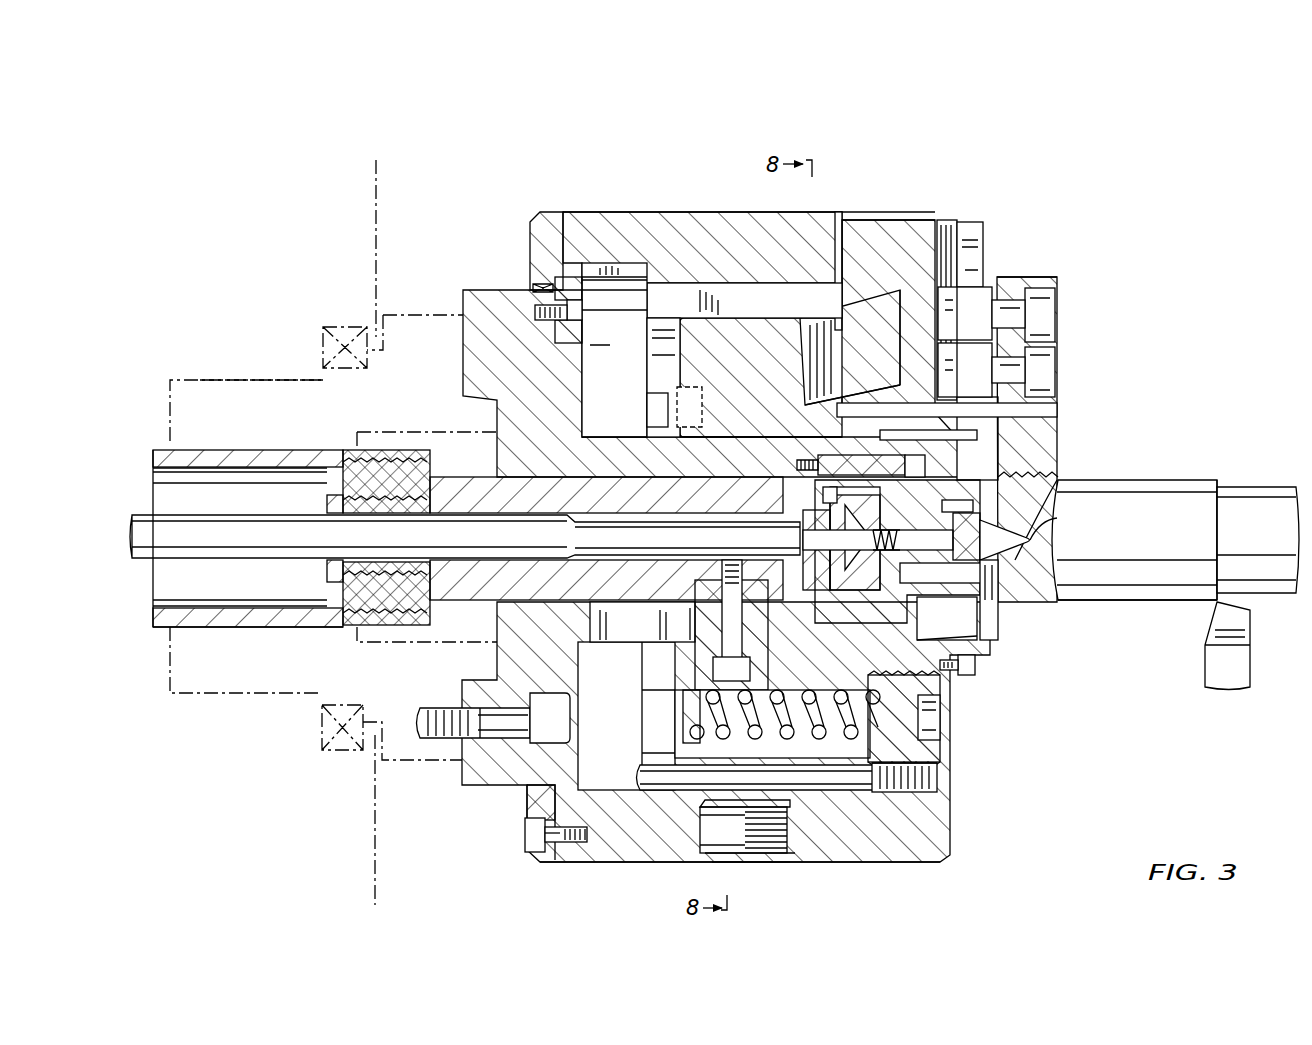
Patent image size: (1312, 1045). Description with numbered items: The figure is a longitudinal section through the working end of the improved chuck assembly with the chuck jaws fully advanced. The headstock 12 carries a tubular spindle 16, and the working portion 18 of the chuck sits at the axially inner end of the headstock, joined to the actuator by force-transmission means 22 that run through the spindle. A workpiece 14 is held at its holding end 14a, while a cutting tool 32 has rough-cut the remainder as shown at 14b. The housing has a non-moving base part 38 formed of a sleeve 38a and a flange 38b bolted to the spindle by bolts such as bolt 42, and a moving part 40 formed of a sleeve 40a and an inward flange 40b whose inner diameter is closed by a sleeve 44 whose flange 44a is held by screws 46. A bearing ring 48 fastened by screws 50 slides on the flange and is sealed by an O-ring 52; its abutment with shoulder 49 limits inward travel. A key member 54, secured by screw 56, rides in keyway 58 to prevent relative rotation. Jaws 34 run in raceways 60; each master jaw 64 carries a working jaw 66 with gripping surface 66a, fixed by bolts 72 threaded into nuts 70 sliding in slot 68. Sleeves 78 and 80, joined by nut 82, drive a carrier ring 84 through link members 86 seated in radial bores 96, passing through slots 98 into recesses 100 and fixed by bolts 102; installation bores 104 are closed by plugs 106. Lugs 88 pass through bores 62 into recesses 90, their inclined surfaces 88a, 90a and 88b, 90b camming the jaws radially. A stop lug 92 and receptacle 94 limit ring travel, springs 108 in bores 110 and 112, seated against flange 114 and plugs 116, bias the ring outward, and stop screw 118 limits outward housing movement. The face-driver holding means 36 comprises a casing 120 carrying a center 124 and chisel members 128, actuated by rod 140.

The headstock 12 is at (323, 257).
The workpiece 14 is at (1268, 480).
The holding end 14a is at (1078, 605).
The rough-cut portion 14b is at (1222, 483).
The spindle 16 is at (262, 388).
The working portion 18 is at (900, 190).
The force-transmission means 22 is at (163, 632).
The cutting tool 32 is at (1240, 637).
The chuck jaws 34 is at (1013, 252).
The second holding means 36 is at (988, 600).
The base part 38 is at (487, 290).
The sleeve 38a is at (630, 452).
The flange 38b is at (515, 650).
The moving part 40 is at (627, 207).
The sleeve 40a is at (595, 214).
The flange 40b is at (840, 408).
The bolt 42 is at (483, 727).
The sleeve 44 is at (923, 433).
The flange 44a is at (965, 428).
The screws 46 is at (978, 670).
The bearing ring 48 is at (530, 218).
The shoulder 49 is at (545, 797).
The screws 50 is at (540, 844).
The O-ring 52 is at (522, 790).
The key member 54 is at (555, 340).
The screw 56 is at (580, 314).
The keyway 58 is at (590, 263).
The jaw raceways 60 is at (840, 212).
The bores 62 is at (745, 283).
The master jaw 64 is at (908, 240).
The working jaw 66 is at (1058, 407).
The gripping surface 66a is at (1060, 485).
The slot 68 is at (938, 270).
The nuts 70 is at (988, 356).
The bolts 72 is at (1052, 362).
The sleeve 78 is at (162, 624).
The sleeve 80 is at (473, 485).
The nut 82 is at (355, 450).
The carrier ring 84 is at (700, 320).
The link members 86 is at (745, 660).
The lugs 88 is at (870, 349).
The inclined lug surface 88a is at (845, 396).
The inclined lug surface 88b is at (838, 300).
The recess 90 is at (898, 332).
The recess surface 90a is at (862, 403).
The recess surface 90b is at (860, 300).
The lug 92 is at (648, 403).
The receptacle 94 is at (686, 405).
The radial bore 96 is at (700, 738).
The slot 98 is at (606, 608).
The recess 100 is at (690, 612).
The bolt 102 is at (726, 630).
The radial bores 104 is at (790, 838).
The plugs 106 is at (737, 848).
The compression springs 108 is at (848, 745).
The bore 110 is at (928, 722).
The bore 112 is at (765, 735).
The annular flange 114 is at (682, 750).
The plug 116 is at (945, 742).
The stop screw 118 is at (910, 795).
The casing member 120 is at (1058, 520).
The center 124 is at (1012, 555).
The chisel members 128 is at (960, 598).
The rod 140 is at (139, 560).